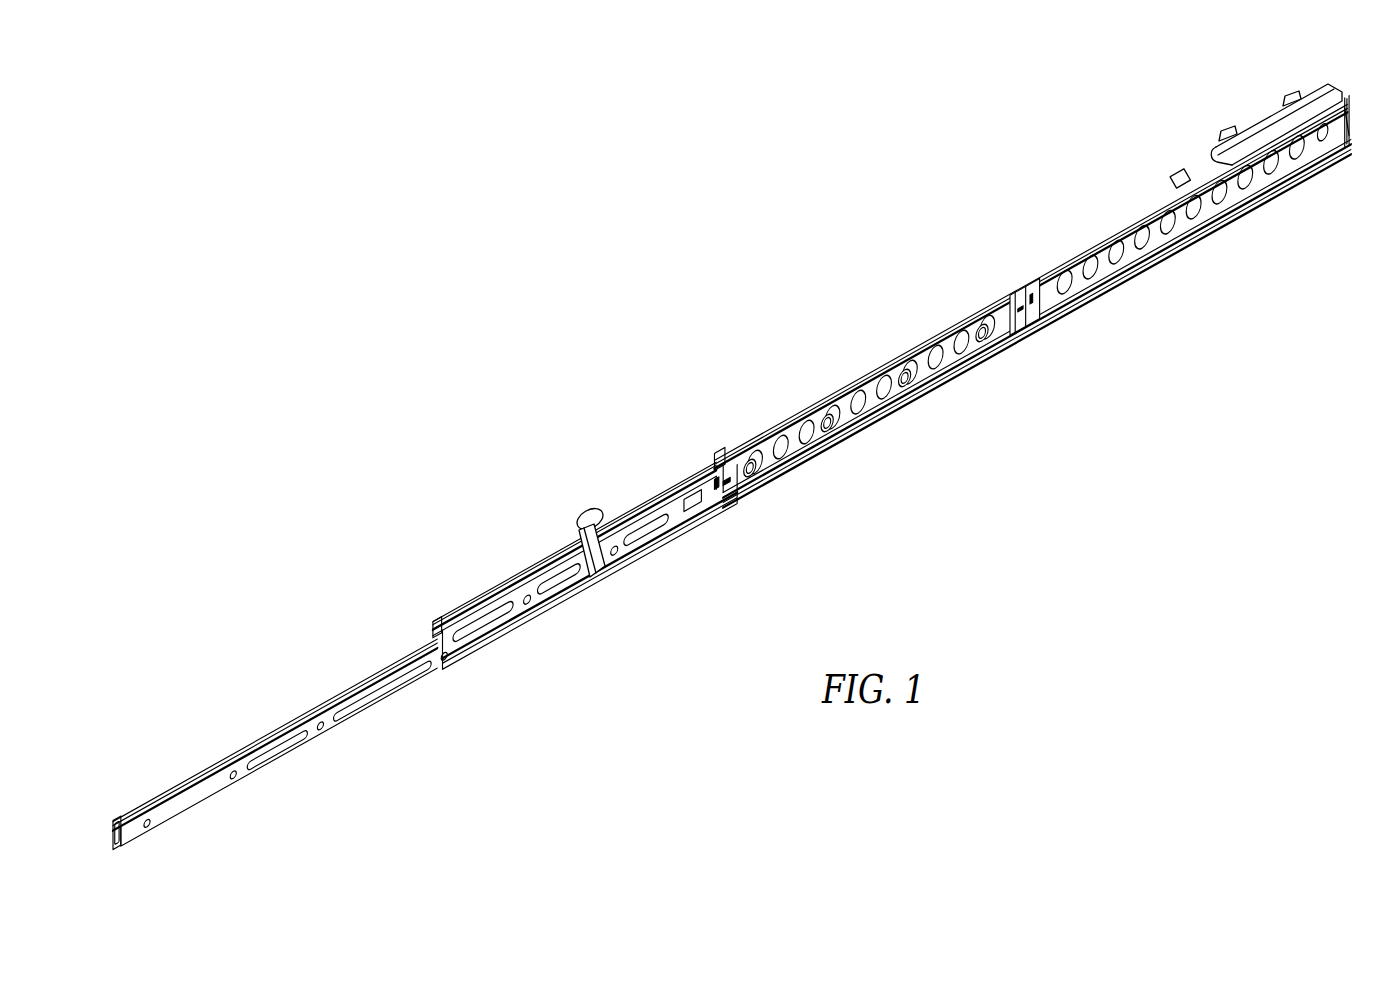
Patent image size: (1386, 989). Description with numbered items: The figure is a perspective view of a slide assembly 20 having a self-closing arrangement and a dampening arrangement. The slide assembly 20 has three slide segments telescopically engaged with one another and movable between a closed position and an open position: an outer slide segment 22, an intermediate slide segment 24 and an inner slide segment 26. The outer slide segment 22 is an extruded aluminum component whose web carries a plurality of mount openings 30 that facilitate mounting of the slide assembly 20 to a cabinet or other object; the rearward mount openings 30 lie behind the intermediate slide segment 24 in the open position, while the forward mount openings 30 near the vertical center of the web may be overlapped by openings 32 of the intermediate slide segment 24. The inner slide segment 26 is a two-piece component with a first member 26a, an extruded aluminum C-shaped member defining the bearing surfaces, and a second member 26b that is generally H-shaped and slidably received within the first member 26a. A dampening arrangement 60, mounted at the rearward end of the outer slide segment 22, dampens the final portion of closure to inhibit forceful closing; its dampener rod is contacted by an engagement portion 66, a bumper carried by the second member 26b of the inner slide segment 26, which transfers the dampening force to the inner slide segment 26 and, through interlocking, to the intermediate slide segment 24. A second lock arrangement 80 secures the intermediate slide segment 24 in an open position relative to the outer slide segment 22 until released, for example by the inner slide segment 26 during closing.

The slide assembly 20 is at (720, 287).
The outer slide segment 22 is at (1070, 252).
The intermediate slide segment 24 is at (633, 508).
The inner slide segment 26 is at (291, 708).
The first member 26a is at (149, 788).
The second member 26b is at (183, 807).
The mount openings 30 is at (1307, 150).
The openings 32 is at (1007, 325).
The dampening arrangement 60 is at (1298, 80).
The engagement portion 66 is at (590, 517).
The second lock arrangement 80 is at (1048, 322).